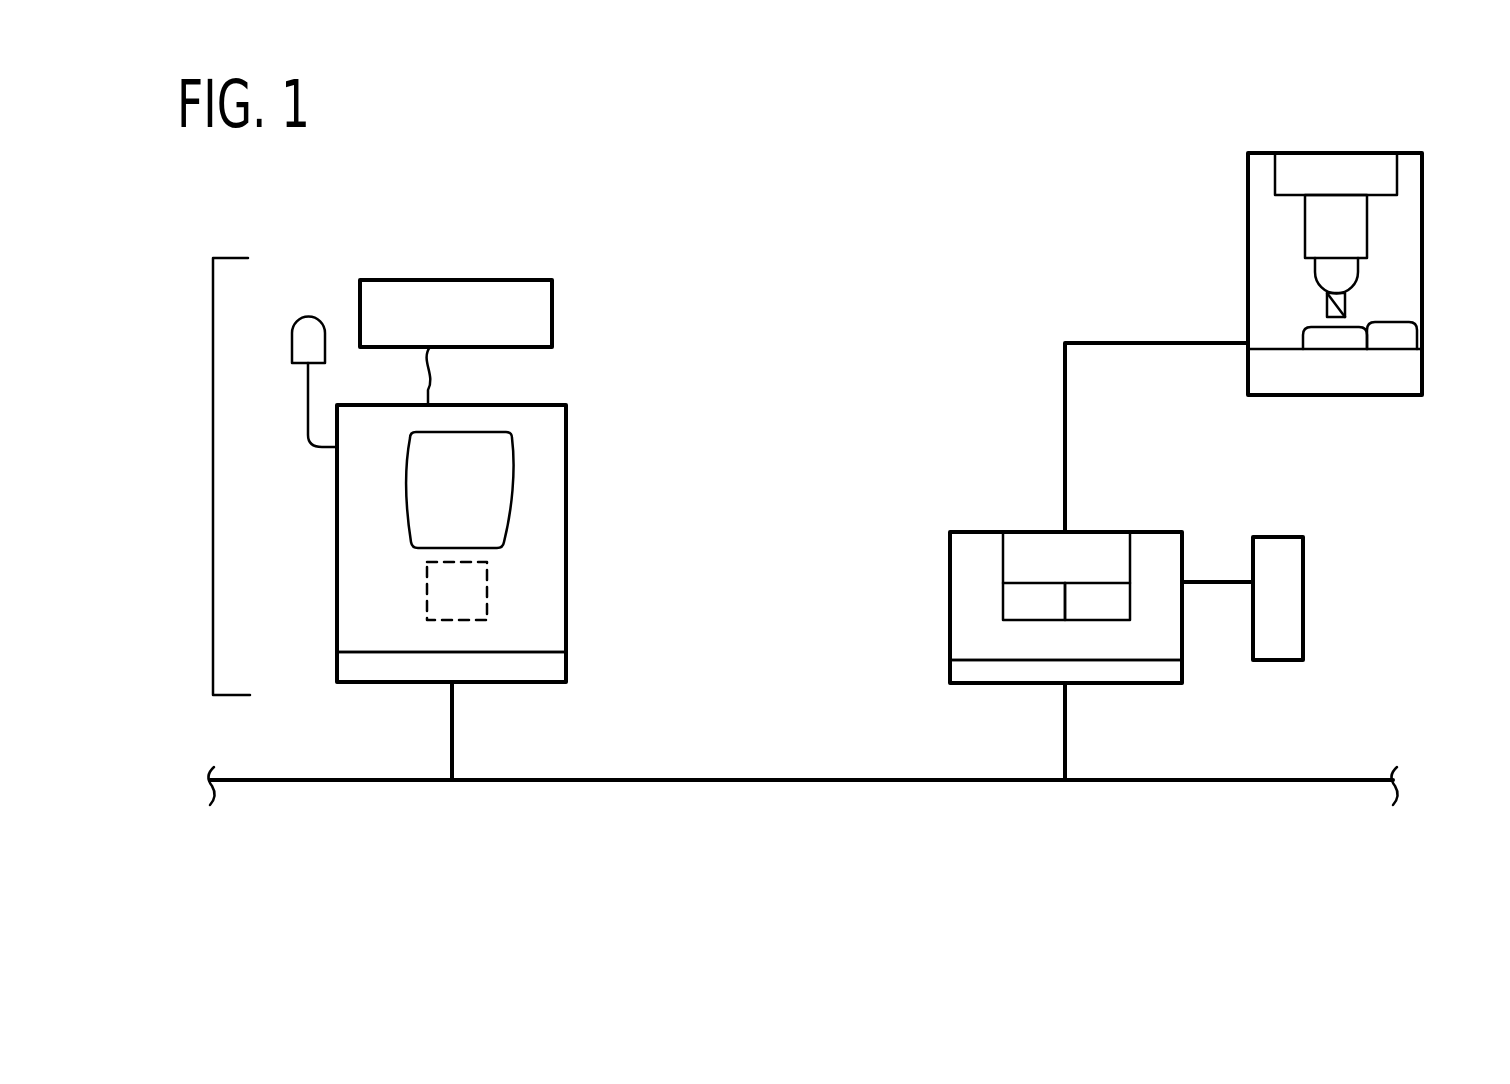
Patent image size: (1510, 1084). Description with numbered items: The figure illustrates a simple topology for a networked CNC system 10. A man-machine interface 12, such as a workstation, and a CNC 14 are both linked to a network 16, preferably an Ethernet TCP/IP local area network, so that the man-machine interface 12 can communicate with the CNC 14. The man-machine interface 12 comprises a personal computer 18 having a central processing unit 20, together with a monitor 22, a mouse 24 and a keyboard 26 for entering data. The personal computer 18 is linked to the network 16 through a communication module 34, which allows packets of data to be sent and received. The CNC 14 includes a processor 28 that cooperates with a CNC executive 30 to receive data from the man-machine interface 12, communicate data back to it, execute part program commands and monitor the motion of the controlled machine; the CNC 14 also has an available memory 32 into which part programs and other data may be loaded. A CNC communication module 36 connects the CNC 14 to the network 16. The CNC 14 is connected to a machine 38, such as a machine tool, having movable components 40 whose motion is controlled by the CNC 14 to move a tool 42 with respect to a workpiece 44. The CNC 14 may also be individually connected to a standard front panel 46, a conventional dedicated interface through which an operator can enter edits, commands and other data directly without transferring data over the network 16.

The system 10 is at (755, 160).
The man-machine interface 12 is at (212, 475).
The CNC 14 is at (960, 517).
The network 16 is at (980, 783).
The personal computer 18 is at (595, 348).
The central processing unit 20 is at (488, 593).
The monitor 22 is at (515, 478).
The mouse 24 is at (292, 340).
The keyboard 26 is at (457, 280).
The processor 28 is at (1008, 613).
The CNC executive 30 is at (1103, 542).
The memory 32 is at (1088, 613).
The communication module 34 is at (553, 648).
The CNC communication module 36 is at (1175, 672).
The machine 38 is at (1238, 210).
The movable components 40 is at (1355, 275).
The tool 42 is at (1345, 303).
The workpiece 44 is at (1390, 322).
The standard front panel 46 is at (1295, 580).